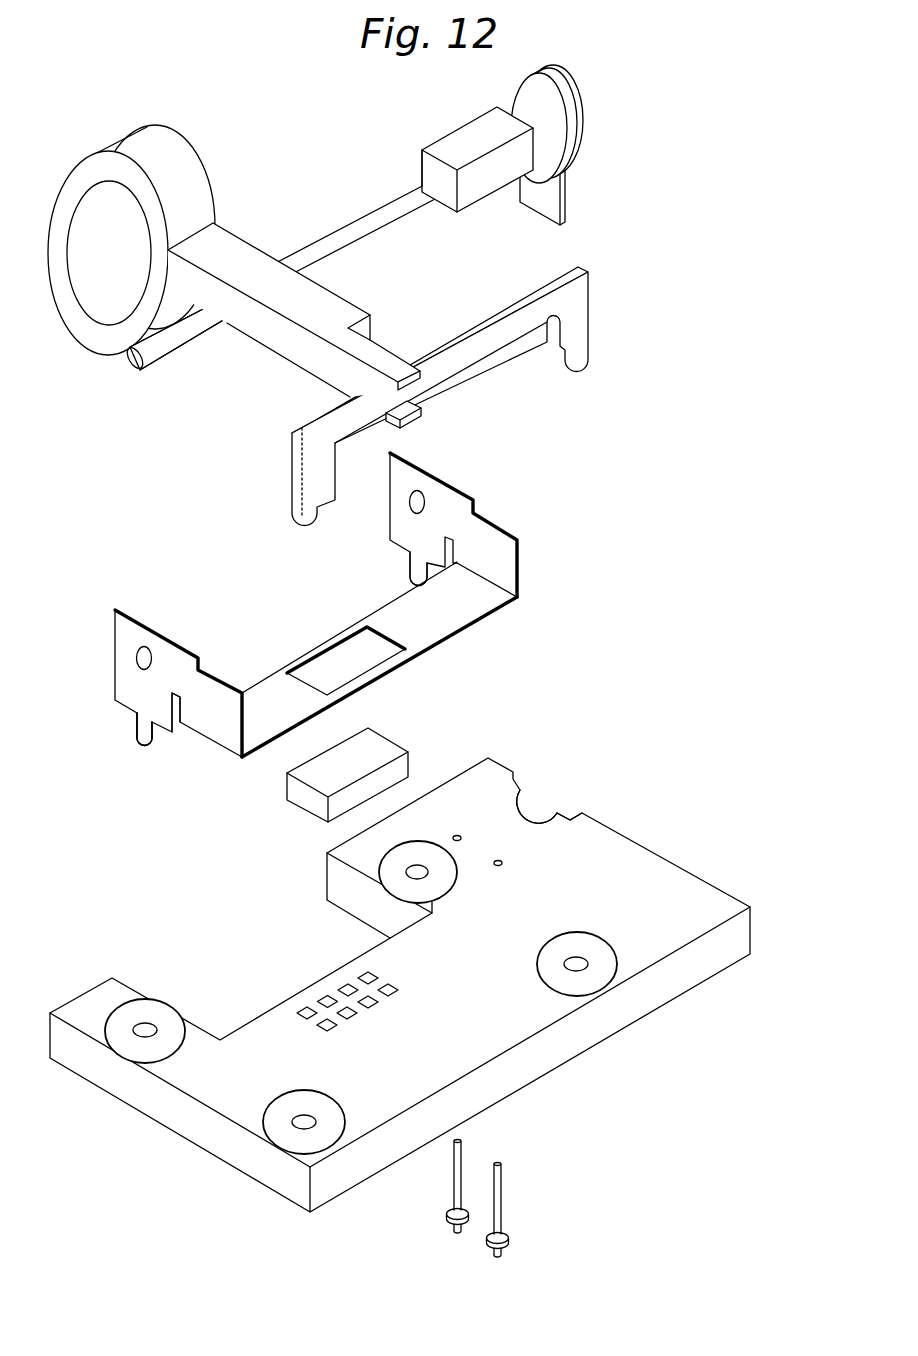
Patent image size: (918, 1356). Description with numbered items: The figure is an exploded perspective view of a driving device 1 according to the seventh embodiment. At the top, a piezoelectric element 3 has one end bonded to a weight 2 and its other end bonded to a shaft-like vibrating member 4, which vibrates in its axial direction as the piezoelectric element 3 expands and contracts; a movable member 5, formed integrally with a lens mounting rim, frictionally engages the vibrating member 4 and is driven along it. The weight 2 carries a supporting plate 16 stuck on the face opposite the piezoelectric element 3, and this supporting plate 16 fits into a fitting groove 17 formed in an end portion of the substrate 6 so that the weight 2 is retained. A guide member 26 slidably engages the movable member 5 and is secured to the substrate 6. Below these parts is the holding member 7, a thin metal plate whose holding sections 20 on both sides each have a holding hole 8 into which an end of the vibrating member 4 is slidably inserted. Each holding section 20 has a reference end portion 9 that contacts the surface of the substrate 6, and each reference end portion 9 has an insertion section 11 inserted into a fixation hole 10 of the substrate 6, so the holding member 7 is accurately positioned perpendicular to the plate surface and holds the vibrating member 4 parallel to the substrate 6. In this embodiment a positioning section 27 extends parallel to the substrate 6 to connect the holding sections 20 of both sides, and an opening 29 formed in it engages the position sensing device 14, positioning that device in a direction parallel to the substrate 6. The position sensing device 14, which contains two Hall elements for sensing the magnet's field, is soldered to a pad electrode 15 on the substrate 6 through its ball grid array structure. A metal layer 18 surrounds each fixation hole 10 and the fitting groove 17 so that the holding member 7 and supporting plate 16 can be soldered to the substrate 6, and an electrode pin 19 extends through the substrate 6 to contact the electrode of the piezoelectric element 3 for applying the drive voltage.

The driving device 1 is at (280, 150).
The weight 2 is at (551, 134).
The piezoelectric element 3 is at (460, 148).
The vibrating member 4 is at (360, 218).
The movable member 5 is at (250, 270).
The substrate 6 is at (400, 979).
The holding member 7 is at (305, 627).
The holding hole 8 is at (142, 645).
The reference end portion 9 is at (165, 742).
The fixation hole 10 is at (423, 867).
The insertion section 11 is at (148, 742).
The position sensing device 14 is at (315, 817).
The pad electrode 15 is at (355, 993).
The supporting plate 16 is at (557, 211).
The fitting groove 17 is at (570, 817).
The metal layer 18 is at (542, 800).
The electrode pin 19 is at (452, 1192).
The holding section 20 is at (412, 532).
The guide member 26 is at (472, 366).
The positioning section 27 is at (378, 659).
The opening 29 is at (335, 640).